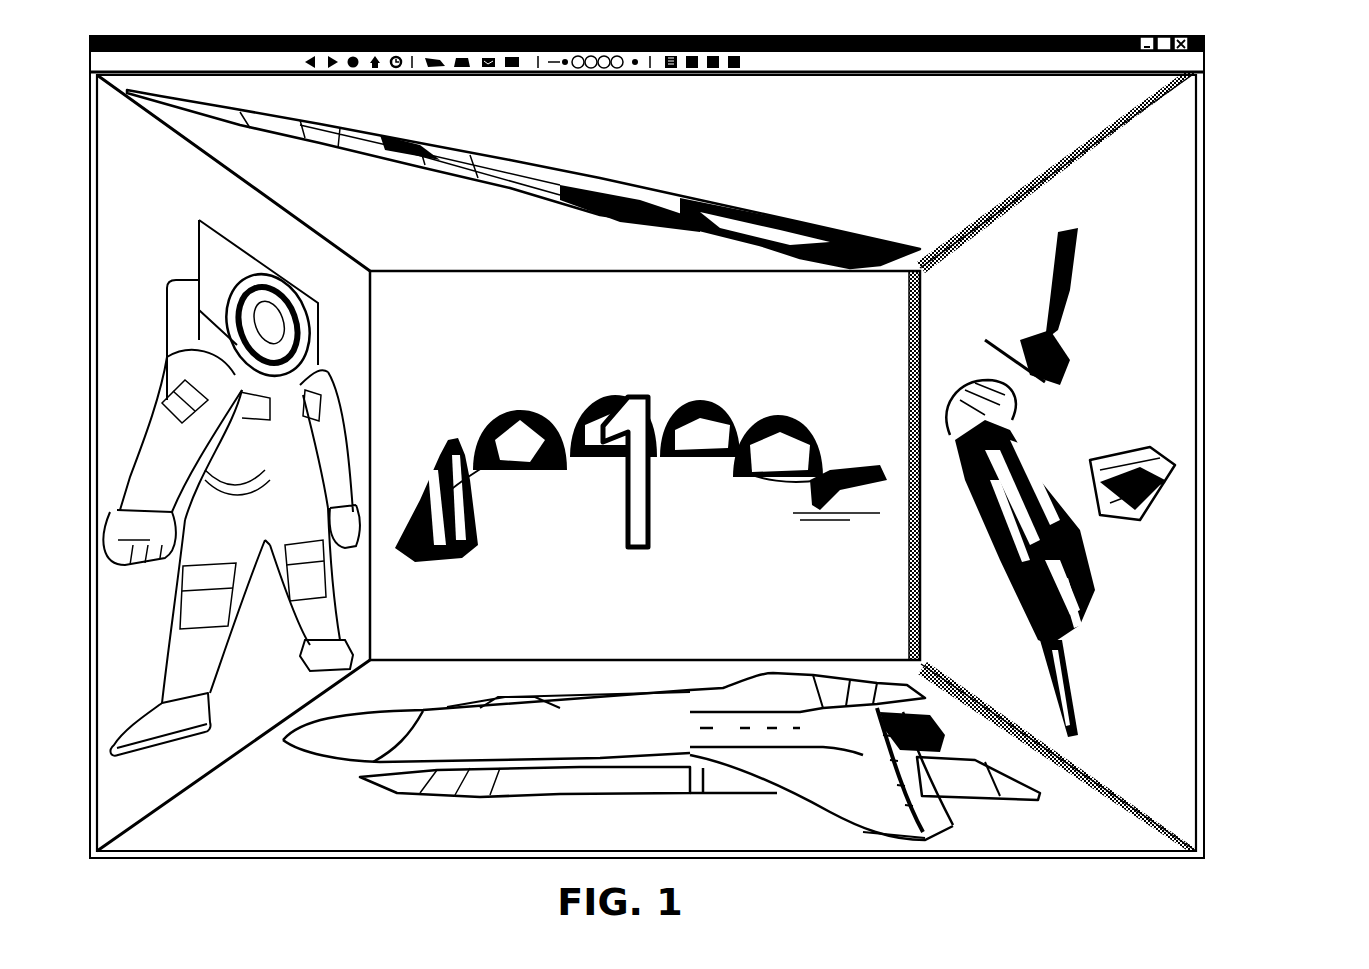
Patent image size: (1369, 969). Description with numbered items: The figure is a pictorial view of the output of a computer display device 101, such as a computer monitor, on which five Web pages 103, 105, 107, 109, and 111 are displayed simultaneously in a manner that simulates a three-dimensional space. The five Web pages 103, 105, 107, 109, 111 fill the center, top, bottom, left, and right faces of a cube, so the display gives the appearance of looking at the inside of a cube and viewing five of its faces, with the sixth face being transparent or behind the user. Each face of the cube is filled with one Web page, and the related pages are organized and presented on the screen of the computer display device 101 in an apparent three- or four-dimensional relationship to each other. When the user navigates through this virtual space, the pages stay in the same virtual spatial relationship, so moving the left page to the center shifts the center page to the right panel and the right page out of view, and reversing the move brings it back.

The computer display device 101 is at (1286, 137).
The Web page 103 is at (856, 323).
The Web page 105 is at (896, 133).
The Web page 107 is at (441, 704).
The Web page 109 is at (161, 204).
The Web page 111 is at (1166, 227).